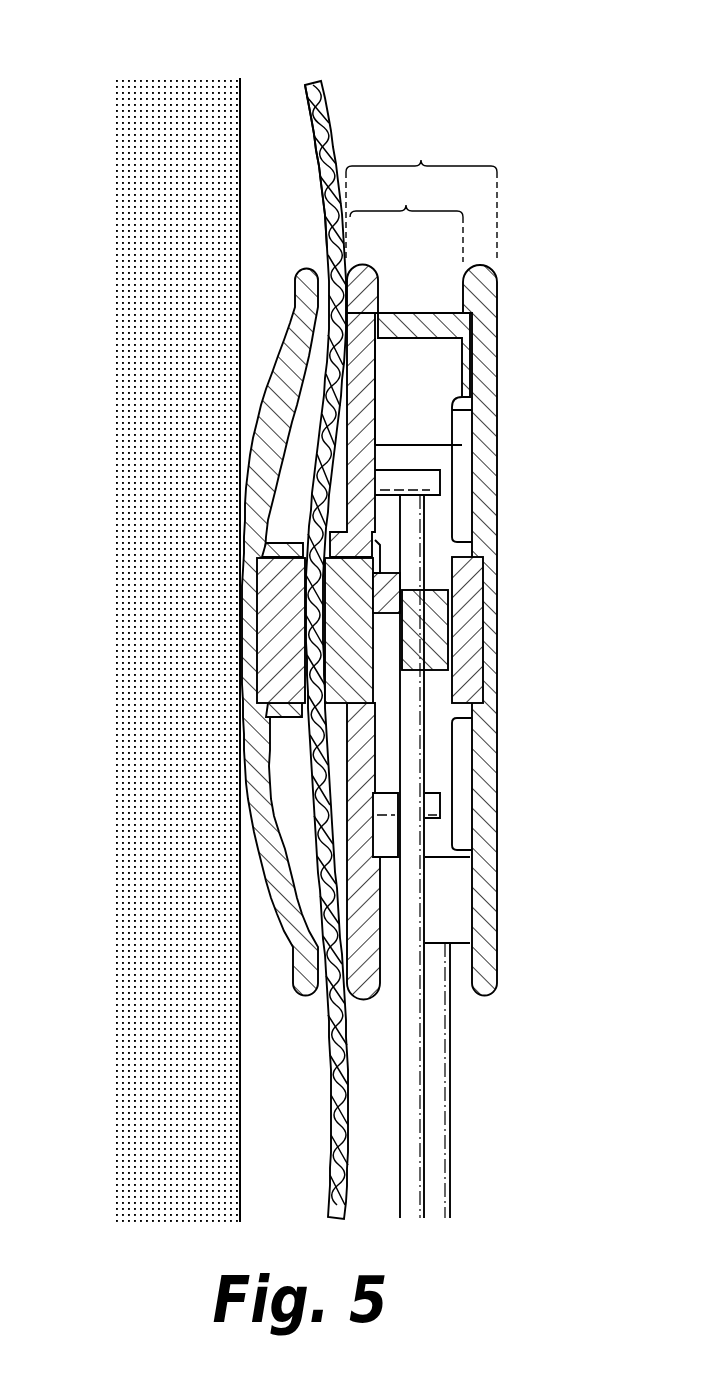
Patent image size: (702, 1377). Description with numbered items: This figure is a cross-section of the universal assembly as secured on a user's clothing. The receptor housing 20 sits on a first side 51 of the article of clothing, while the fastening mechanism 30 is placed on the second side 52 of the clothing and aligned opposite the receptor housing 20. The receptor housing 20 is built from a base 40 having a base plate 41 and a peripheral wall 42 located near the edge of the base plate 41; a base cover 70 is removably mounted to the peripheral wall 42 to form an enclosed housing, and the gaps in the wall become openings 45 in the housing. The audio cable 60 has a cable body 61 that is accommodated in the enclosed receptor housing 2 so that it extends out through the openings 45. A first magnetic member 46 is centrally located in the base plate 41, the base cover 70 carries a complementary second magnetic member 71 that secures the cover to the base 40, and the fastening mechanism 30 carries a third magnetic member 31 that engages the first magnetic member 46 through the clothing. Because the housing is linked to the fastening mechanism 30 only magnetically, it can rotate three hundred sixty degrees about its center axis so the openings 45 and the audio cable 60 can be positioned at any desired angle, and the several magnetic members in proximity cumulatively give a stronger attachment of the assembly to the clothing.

The receptor housing 2 is at (170, 78).
The receptor housing 20 is at (421, 195).
The fastening mechanism 30 is at (305, 997).
The third magnetic member 31 is at (270, 625).
The base 40 is at (397, 587).
The base plate 41 is at (365, 268).
The peripheral wall 42 is at (430, 312).
The openings 45 is at (448, 958).
The first magnetic member 46 is at (440, 647).
The first side of article of clothing 51 is at (322, 118).
The second side of article of clothing 52 is at (305, 140).
The audio cable 60 is at (470, 1113).
The cable body 61 is at (423, 757).
The base cover 70 is at (480, 263).
The second magnetic member 71 is at (473, 588).